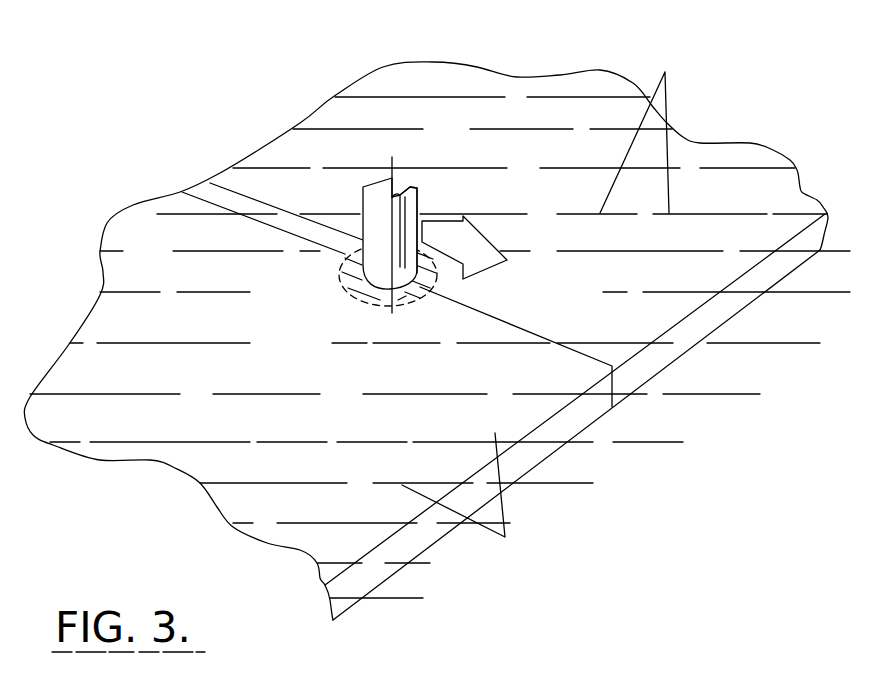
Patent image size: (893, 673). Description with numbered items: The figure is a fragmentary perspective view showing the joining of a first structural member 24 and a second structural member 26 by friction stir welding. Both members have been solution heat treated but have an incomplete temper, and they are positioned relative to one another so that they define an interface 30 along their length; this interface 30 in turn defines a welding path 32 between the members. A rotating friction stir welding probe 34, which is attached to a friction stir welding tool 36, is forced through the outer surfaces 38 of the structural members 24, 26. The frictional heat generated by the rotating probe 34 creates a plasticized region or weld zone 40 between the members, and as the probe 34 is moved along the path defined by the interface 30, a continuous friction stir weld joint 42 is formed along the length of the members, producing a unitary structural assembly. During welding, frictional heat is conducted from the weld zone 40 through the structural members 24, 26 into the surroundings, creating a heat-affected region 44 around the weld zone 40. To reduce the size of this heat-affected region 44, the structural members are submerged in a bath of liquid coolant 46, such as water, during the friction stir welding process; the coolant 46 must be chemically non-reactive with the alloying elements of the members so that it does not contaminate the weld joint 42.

The first structural member 24 is at (428, 443).
The second structural member 26 is at (687, 290).
The interface 30 is at (532, 332).
The welding path 32 is at (478, 233).
The friction stir welding probe 34 is at (387, 288).
The friction stir welding tool 36 is at (410, 193).
The outer surfaces 38 is at (157, 278).
The weld zone 40 is at (360, 291).
The friction stir weld joint 42 is at (245, 210).
The heat-affected region 44 is at (405, 295).
The liquid coolant 46 is at (665, 72).